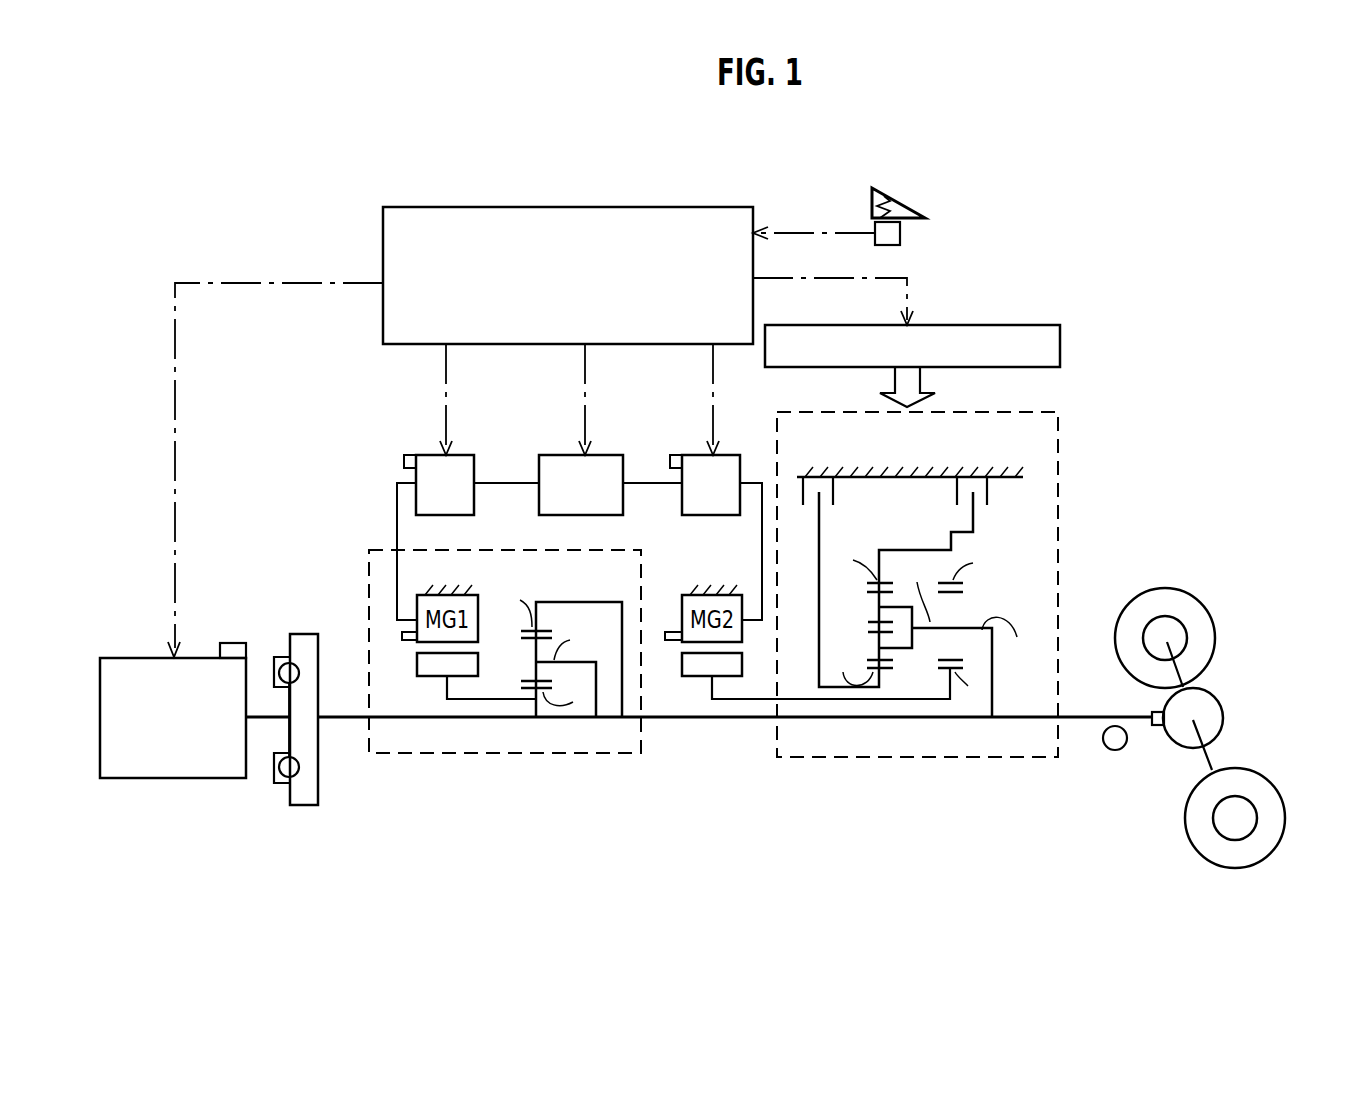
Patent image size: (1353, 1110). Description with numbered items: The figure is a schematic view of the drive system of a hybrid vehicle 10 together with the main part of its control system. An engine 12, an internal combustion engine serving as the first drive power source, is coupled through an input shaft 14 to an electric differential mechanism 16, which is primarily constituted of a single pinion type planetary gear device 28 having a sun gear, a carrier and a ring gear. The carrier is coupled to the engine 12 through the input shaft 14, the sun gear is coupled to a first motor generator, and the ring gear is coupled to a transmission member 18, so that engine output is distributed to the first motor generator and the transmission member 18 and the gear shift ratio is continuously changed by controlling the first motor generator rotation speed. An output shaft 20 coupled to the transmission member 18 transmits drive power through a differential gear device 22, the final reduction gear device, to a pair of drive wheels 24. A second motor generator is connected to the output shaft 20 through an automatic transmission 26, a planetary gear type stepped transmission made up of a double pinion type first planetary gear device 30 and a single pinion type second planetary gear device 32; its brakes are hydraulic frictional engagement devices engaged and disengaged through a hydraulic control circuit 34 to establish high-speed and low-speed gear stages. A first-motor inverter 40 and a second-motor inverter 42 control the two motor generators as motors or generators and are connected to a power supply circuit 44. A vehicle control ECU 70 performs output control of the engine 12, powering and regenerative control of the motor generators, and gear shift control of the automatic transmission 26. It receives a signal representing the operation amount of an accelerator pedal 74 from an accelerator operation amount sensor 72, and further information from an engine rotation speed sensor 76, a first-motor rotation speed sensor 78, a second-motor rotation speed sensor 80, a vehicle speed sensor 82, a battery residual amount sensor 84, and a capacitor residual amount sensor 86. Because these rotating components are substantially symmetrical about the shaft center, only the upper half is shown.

The hybrid vehicle 10 is at (1152, 236).
The engine 12 is at (176, 768).
The input shaft 14 is at (343, 718).
The electric differential mechanism 16 is at (599, 753).
The transmission member 18 is at (570, 600).
The output shaft 20 is at (728, 718).
The differential gear device 22 is at (1208, 712).
The drive wheels 24 is at (1202, 623).
The automatic transmission 26 is at (1058, 450).
The planetary gear device 28 is at (530, 740).
The first planetary gear device 30 is at (869, 740).
The second planetary gear device 32 is at (947, 740).
The hydraulic control circuit 34 is at (950, 333).
The MG1 inverter 40 is at (468, 463).
The MG2 inverter 42 is at (722, 463).
The power supply circuit 44 is at (605, 463).
The vehicle control electronic control unit 70 is at (666, 218).
The accelerator operation amount sensor 72 is at (892, 235).
The accelerator pedal 74 is at (892, 196).
The engine rotation speed sensor 76 is at (234, 650).
The MG1 rotation speed sensor 78 is at (402, 637).
The MG2 rotation speed sensor 80 is at (666, 637).
The vehicle speed sensor 82 is at (1117, 750).
The SOC1 sensor 84 is at (409, 452).
The SOC2 sensor 86 is at (676, 452).